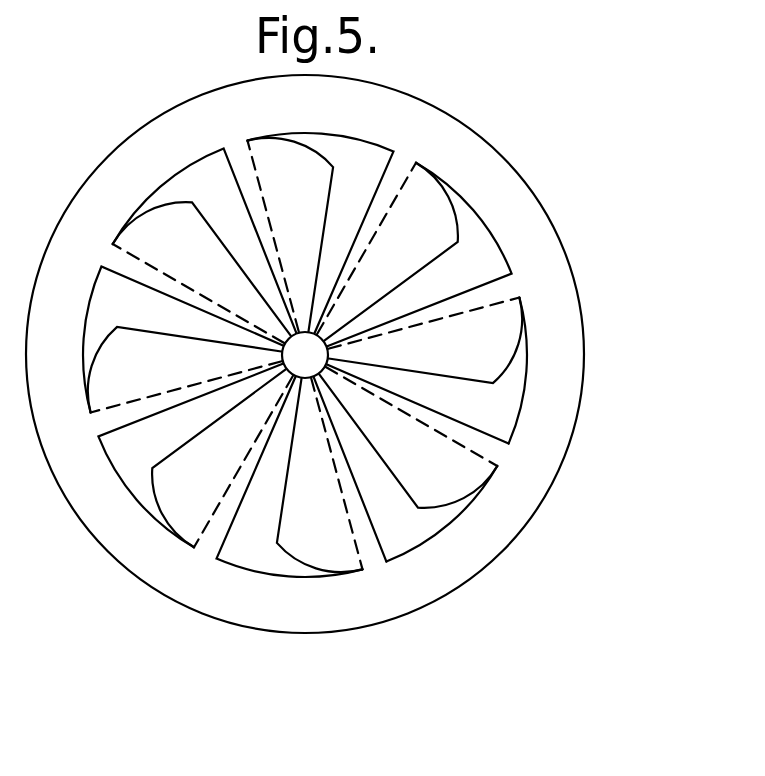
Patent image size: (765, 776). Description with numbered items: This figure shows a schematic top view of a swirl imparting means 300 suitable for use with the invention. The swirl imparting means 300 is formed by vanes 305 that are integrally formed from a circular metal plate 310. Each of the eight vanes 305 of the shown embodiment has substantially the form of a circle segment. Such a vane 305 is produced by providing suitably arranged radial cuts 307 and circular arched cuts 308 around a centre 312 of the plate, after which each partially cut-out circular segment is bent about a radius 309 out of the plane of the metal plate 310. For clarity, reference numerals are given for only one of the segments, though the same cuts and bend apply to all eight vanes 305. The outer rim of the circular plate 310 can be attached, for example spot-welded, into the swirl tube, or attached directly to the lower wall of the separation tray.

The swirl imparting means 300 is at (363, 354).
The vane 305 is at (513, 336).
The radial cut 307 is at (478, 416).
The circular arched cut 308 is at (528, 361).
The radius 309 is at (500, 291).
The metal plate 310 is at (536, 471).
The centre 312 is at (298, 357).